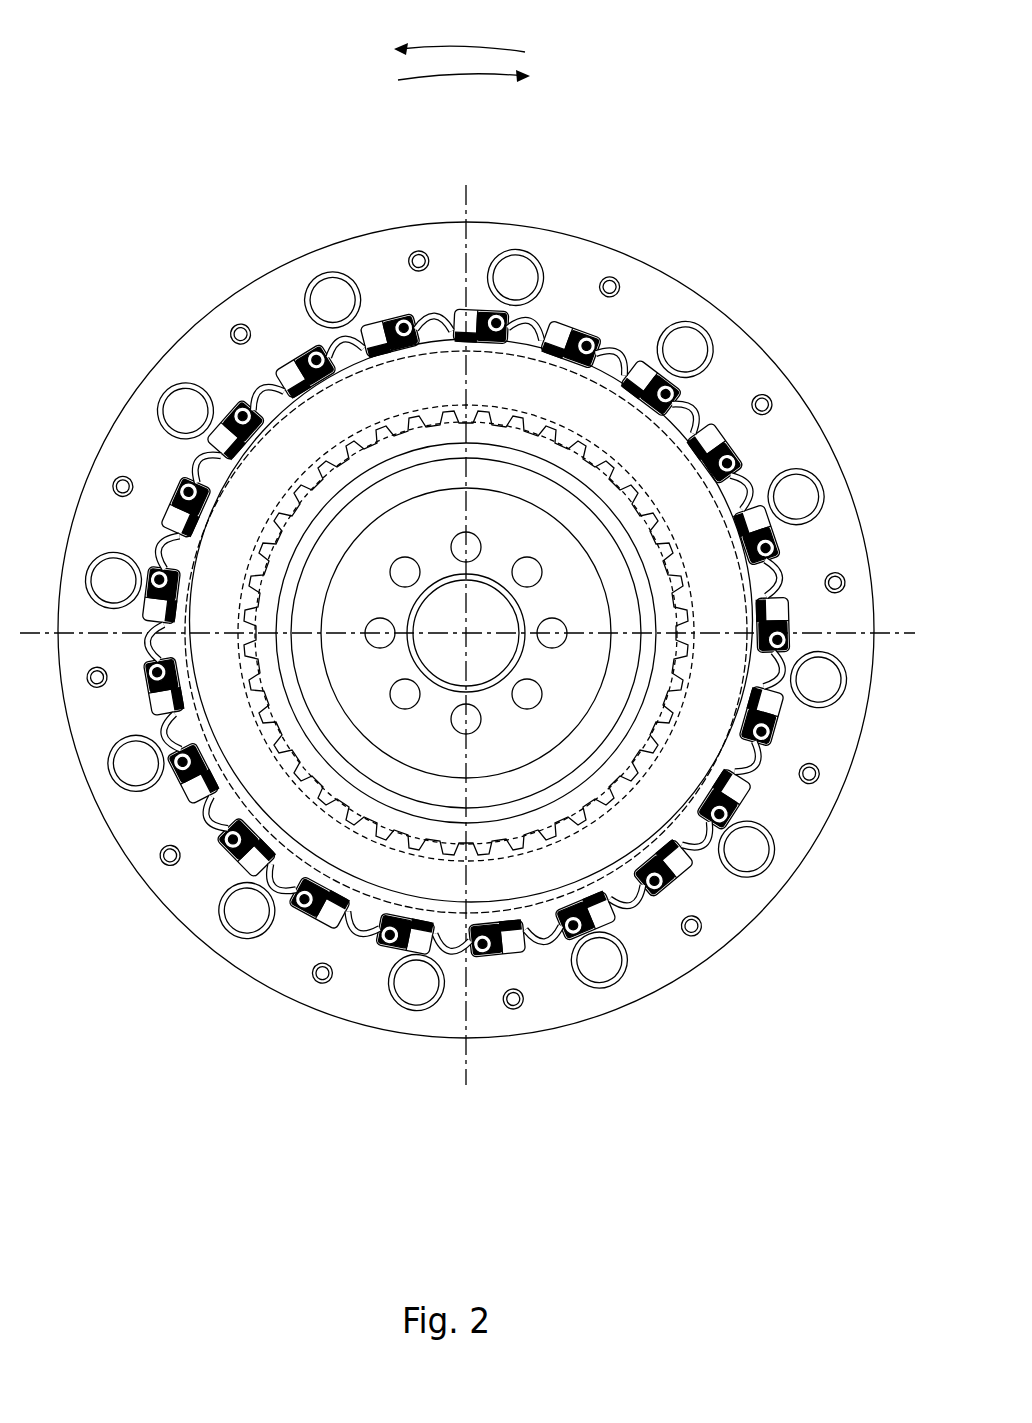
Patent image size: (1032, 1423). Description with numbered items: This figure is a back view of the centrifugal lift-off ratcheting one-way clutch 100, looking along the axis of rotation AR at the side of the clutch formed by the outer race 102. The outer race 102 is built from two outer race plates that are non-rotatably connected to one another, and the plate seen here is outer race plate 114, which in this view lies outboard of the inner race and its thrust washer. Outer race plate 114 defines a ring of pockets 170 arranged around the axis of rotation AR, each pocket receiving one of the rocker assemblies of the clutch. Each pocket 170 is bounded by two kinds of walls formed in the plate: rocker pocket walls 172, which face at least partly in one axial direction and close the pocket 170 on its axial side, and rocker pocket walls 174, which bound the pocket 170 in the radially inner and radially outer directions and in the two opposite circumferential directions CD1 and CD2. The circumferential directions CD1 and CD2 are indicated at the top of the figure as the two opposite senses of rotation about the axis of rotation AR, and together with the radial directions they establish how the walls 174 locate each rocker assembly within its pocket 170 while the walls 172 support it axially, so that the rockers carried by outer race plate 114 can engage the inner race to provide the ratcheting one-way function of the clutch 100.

The centrifugal lift-off ratcheting one-way clutch 100 is at (730, 137).
The outer race 102 is at (605, 238).
The outer race plate 114 is at (235, 293).
The pocket 170 is at (697, 403).
The rocker pocket wall 172 is at (680, 412).
The rocker pocket wall 174 is at (773, 573).
The axis of rotation AR is at (470, 636).
The circumferential direction CD1 is at (470, 45).
The circumferential direction CD2 is at (500, 78).